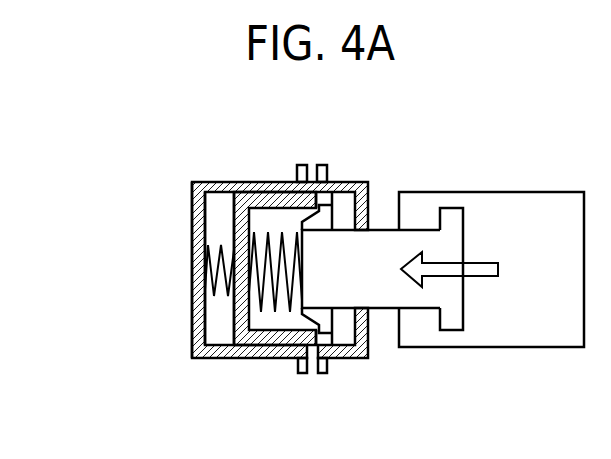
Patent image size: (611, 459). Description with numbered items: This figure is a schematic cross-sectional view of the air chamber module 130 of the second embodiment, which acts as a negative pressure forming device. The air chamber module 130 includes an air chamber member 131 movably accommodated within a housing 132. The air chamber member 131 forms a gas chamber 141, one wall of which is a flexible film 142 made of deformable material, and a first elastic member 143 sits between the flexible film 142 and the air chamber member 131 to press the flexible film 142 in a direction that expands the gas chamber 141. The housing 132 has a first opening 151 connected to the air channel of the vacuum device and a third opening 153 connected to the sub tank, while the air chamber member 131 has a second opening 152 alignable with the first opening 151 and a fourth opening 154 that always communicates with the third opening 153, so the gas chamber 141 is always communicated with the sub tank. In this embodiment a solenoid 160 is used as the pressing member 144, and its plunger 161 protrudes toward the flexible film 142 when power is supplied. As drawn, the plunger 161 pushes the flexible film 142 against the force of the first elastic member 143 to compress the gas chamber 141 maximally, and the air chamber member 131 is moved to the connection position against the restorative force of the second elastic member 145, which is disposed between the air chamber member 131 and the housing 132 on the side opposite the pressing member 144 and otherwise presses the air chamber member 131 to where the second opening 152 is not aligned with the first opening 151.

The air chamber module 130 is at (179, 155).
The air chamber member 131 is at (246, 215).
The housing 132 is at (200, 245).
The gas chamber 141 is at (257, 194).
The flexible film 142 is at (325, 215).
The first elastic member 143 is at (263, 288).
The pressing member 144 is at (470, 174).
The second elastic member 145 is at (210, 273).
The first opening 151 is at (313, 175).
The second opening 152 is at (291, 193).
The third opening 153 is at (313, 372).
The fourth opening 154 is at (292, 340).
The solenoid 160 is at (507, 347).
The plunger 161 is at (387, 298).